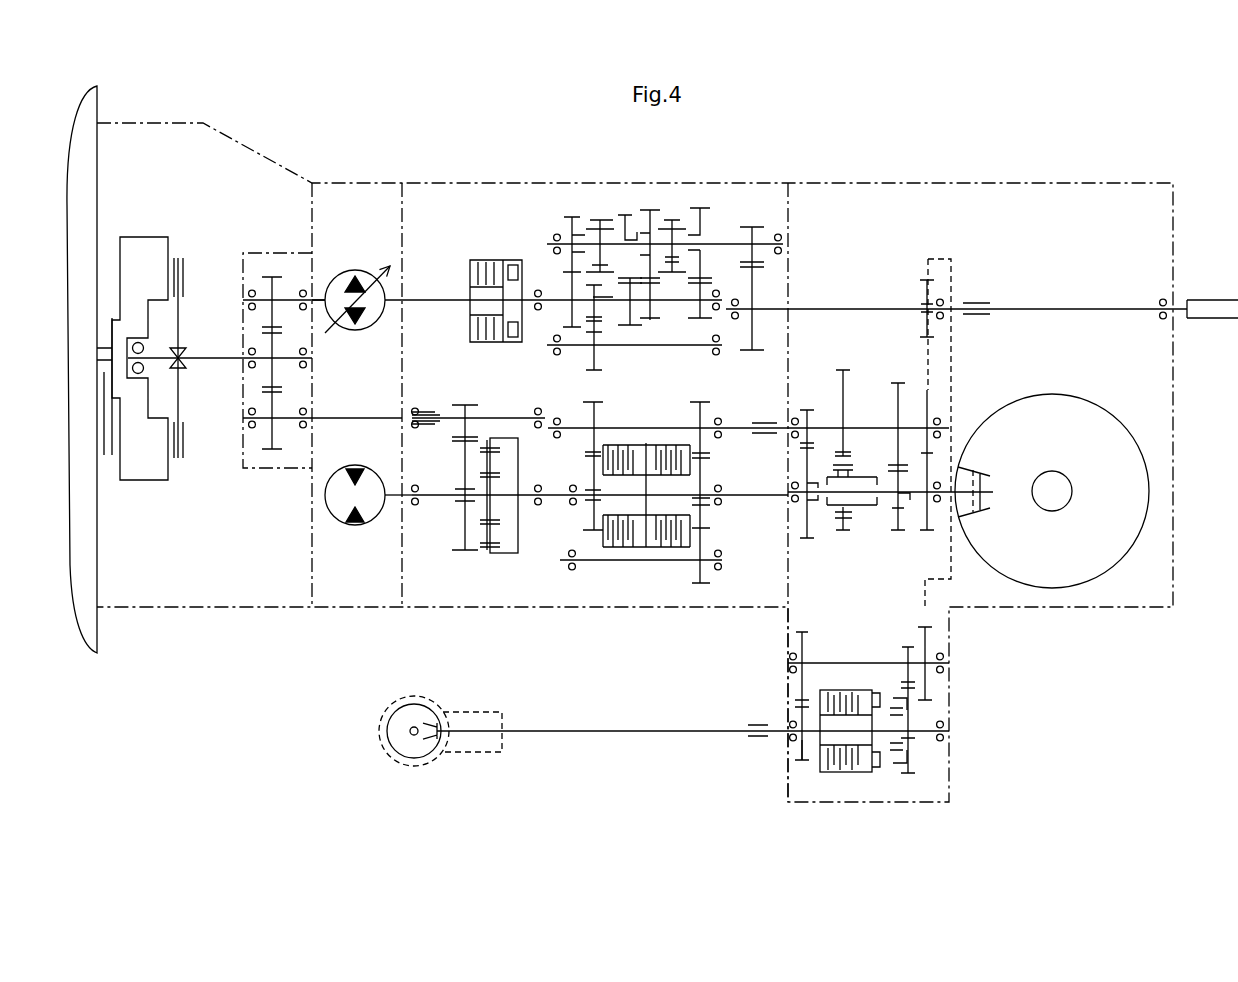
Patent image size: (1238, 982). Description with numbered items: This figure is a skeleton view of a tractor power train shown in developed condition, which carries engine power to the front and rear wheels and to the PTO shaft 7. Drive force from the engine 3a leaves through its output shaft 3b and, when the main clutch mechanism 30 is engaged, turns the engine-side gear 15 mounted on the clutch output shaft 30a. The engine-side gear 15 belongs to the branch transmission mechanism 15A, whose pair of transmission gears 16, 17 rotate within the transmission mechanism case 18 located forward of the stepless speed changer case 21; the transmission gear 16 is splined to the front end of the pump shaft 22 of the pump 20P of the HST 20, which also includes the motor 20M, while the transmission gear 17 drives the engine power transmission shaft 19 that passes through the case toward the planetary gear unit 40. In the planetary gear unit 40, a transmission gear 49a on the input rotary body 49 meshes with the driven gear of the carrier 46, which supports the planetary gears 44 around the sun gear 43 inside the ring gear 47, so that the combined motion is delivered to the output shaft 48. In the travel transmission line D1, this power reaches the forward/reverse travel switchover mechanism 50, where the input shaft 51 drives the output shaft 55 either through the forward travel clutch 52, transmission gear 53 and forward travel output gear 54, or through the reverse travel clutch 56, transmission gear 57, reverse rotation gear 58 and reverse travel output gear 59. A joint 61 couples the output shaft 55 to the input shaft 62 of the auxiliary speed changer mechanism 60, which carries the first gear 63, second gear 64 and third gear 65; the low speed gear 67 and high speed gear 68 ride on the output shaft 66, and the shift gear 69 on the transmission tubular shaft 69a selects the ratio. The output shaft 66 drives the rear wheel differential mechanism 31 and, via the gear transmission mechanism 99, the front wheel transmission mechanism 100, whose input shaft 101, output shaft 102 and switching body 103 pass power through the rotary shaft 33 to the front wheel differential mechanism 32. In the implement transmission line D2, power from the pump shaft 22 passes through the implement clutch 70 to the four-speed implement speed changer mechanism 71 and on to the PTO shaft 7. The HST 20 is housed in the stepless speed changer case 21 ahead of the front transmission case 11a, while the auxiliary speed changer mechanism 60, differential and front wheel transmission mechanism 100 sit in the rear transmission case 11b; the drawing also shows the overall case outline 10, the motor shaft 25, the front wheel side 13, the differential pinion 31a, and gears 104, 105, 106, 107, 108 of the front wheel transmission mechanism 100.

The engine 3a is at (92, 98).
The output shaft 3b is at (106, 456).
The PTO shaft 7 is at (1212, 298).
The transmission case 10 is at (228, 132).
The front transmission case 11a is at (540, 180).
The rear transmission case 11b is at (955, 180).
The front wheel 13 is at (378, 733).
The engine-side gear 15 is at (267, 368).
The branch transmission mechanism 15A is at (264, 370).
The transmission gear 16 is at (266, 285).
The transmission gear 17 is at (266, 437).
The transmission mechanism case 18 is at (271, 250).
The engine power transmission shaft 19 is at (357, 416).
The stepless speed changer unit (HST) 20 is at (357, 358).
The pump 20P is at (364, 268).
The hydraulic motor 20M is at (359, 527).
The stepless speed changer case 21 is at (366, 180).
The pump shaft 22 is at (431, 298).
The motor shaft 25 is at (406, 465).
The main clutch mechanism 30 is at (149, 226).
The output shaft 30a is at (217, 356).
The rear wheel differential mechanism 31 is at (1092, 402).
The differential input pinion 31a is at (983, 512).
The front wheel differential mechanism 32 is at (395, 708).
The rotary shaft 33 is at (580, 736).
The planetary gear unit 40 is at (487, 527).
The sun gear 43 is at (480, 505).
The planetary gears 44 is at (497, 456).
The carrier 46 is at (462, 482).
The ring gear 47 is at (502, 557).
The output shaft 48 is at (554, 493).
The input rotary body 49 is at (501, 412).
The transmission gear 49a is at (462, 400).
The forward/reverse travel switchover mechanism 50 is at (662, 477).
The input shaft 51 is at (688, 500).
The forward travel clutch 52 is at (621, 552).
The transmission gear 53 is at (590, 527).
The forward travel output gear 54 is at (596, 417).
The output shaft 55 is at (657, 424).
The reverse travel clutch 56 is at (667, 552).
The transmission gear 57 is at (710, 482).
The reverse rotation gear 58 is at (705, 590).
The reverse travel output gear 59 is at (727, 412).
The auxiliary speed changer mechanism 60 is at (949, 441).
The joint 61 is at (762, 414).
The input shaft 62 is at (896, 390).
The first gear 63 is at (808, 410).
The second gear 64 is at (843, 397).
The third gear 65 is at (922, 336).
The output shaft 66 is at (932, 452).
The low speed gear 67 is at (807, 540).
The high speed gear 68 is at (898, 535).
The shift gear 69 is at (841, 532).
The transmission tubular shaft 69a is at (857, 510).
The implement clutch 70 is at (469, 254).
The implement speed changer mechanism 71 is at (678, 200).
The gear transmission mechanism 99 is at (952, 278).
The front wheel transmission mechanism 100 is at (854, 713).
The input shaft 101 is at (828, 660).
The output shaft 102 is at (772, 725).
The switching body 103 is at (881, 766).
The drive gear 104 is at (913, 770).
The drive gear 105 is at (906, 658).
The front wheel clutch 106 is at (845, 773).
The transmission gear 107 is at (800, 640).
The transmission gear 108 is at (801, 743).
The travel transmission line D1 is at (963, 632).
The implement transmission line D2 is at (821, 234).